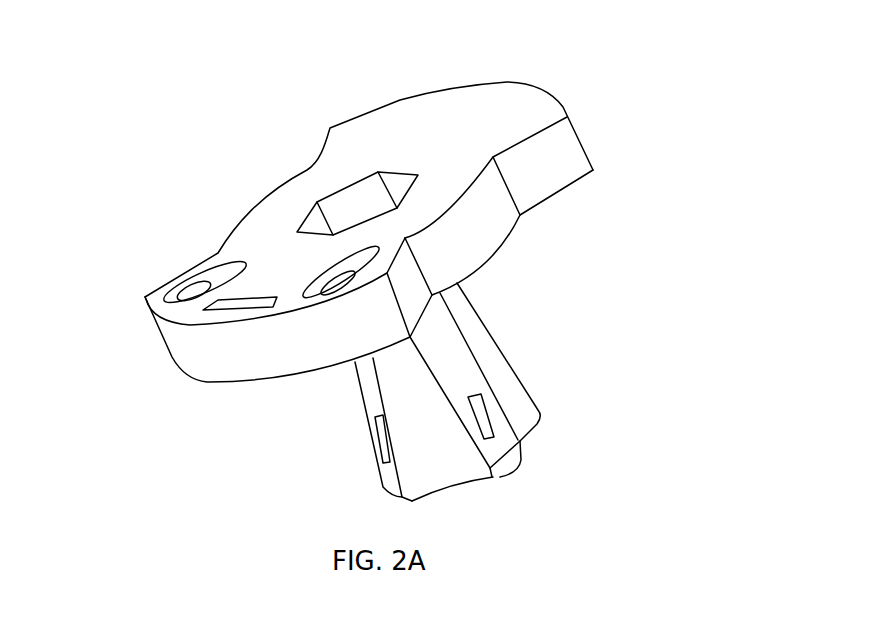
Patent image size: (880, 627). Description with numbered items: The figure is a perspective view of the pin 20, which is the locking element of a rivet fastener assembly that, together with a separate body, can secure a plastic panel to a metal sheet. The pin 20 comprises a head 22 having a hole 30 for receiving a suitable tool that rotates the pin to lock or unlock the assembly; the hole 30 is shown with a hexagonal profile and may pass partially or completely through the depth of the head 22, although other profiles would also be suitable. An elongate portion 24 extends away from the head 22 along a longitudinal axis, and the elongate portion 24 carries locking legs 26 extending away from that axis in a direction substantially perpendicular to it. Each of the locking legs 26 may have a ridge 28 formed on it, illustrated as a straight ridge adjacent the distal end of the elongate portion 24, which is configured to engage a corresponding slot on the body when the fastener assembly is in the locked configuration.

The pin 20 is at (168, 172).
The head 22 is at (538, 83).
The elongate portion 24 is at (552, 486).
The locking legs 26 is at (513, 388).
The ridge 28 is at (383, 448).
The hole 30 is at (345, 208).